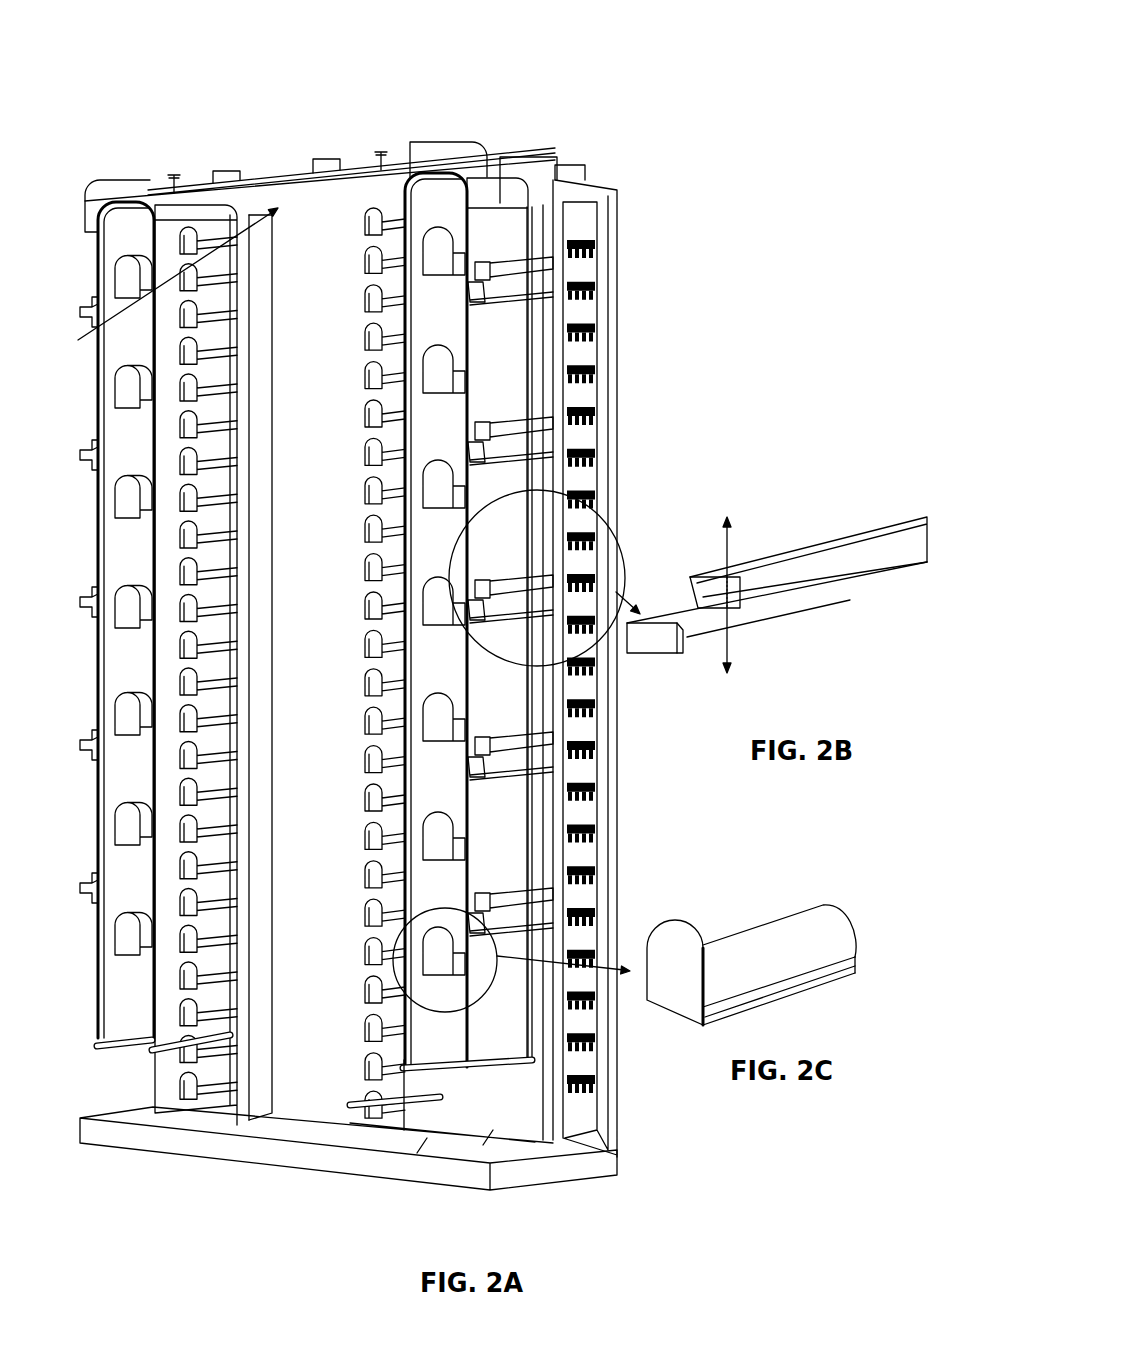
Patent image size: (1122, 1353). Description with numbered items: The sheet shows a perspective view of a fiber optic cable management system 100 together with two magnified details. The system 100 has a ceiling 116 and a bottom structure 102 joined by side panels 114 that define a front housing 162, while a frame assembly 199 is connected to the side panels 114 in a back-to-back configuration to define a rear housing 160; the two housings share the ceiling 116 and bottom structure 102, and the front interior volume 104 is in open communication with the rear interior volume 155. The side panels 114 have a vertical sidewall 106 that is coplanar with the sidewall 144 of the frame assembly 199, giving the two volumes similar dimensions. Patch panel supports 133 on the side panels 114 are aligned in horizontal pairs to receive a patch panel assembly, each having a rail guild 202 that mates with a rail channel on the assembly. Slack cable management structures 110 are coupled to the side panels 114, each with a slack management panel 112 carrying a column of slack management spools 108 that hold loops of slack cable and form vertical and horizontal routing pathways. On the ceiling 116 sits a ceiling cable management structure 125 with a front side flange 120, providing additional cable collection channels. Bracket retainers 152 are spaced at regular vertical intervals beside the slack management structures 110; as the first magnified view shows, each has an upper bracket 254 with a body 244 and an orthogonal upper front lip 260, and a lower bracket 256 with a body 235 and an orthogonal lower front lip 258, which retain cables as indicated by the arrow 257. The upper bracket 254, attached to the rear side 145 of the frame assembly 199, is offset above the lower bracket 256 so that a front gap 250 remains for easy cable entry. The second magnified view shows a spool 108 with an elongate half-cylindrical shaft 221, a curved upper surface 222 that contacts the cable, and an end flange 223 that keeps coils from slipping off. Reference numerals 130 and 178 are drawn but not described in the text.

In FIG. 2A, the fiber optic cable management system 100 is at (452, 48).
In FIG. 2A, the bottom structure 102 is at (538, 1155).
In FIG. 2A, the front interior volume 104 is at (318, 654).
In FIG. 2A, the vertical sidewall 106 is at (243, 352).
In FIG. 2A, the slack management spool 108 is at (428, 263).
In FIG. 2C, the slack management spool 108 is at (850, 850).
In FIG. 2A, the slack cable management structure 110 is at (124, 352).
In FIG. 2A, the slack management panel 112 is at (125, 517).
In FIG. 2A, the side panel 114 is at (233, 488).
In FIG. 2A, the ceiling 116 is at (183, 187).
In FIG. 2A, the front side flange 120 is at (233, 168).
In FIG. 2A, the ceiling cable management structure 125 is at (328, 45).
In FIG. 2A, the rod 130 is at (230, 707).
In FIG. 2A, the patch panel support 133 is at (370, 413).
In FIG. 2A, the sidewall 144 is at (260, 693).
In FIG. 2A, the rear side 145 is at (537, 483).
In FIG. 2A, the bracket retainer 152 is at (502, 418).
In FIG. 2B, the bracket retainer 152 is at (780, 488).
In FIG. 2A, the rear interior volume 155 is at (337, 584).
In FIG. 2A, the rear housing 160 is at (586, 218).
In FIG. 2A, the front housing 162 is at (150, 238).
In FIG. 2A, the post 178 is at (543, 1050).
In FIG. 2A, the frame assembly 199 is at (265, 262).
In FIG. 2A, the rail guild 202 is at (90, 340).
In FIG. 2C, the half-cylindrical shaft 221 is at (832, 970).
In FIG. 2C, the curved upper surface 222 is at (762, 938).
In FIG. 2C, the end flange 223 is at (672, 947).
In FIG. 2B, the body 235 is at (700, 577).
In FIG. 2B, the body 244 is at (830, 573).
In FIG. 2B, the front gap 250 is at (694, 650).
In FIG. 2B, the upper bracket 254 is at (803, 575).
In FIG. 2B, the lower bracket 256 is at (640, 605).
In FIG. 2B, the arrow 257 is at (725, 648).
In FIG. 2B, the lower front lip 258 is at (668, 643).
In FIG. 2B, the upper front lip 260 is at (747, 605).